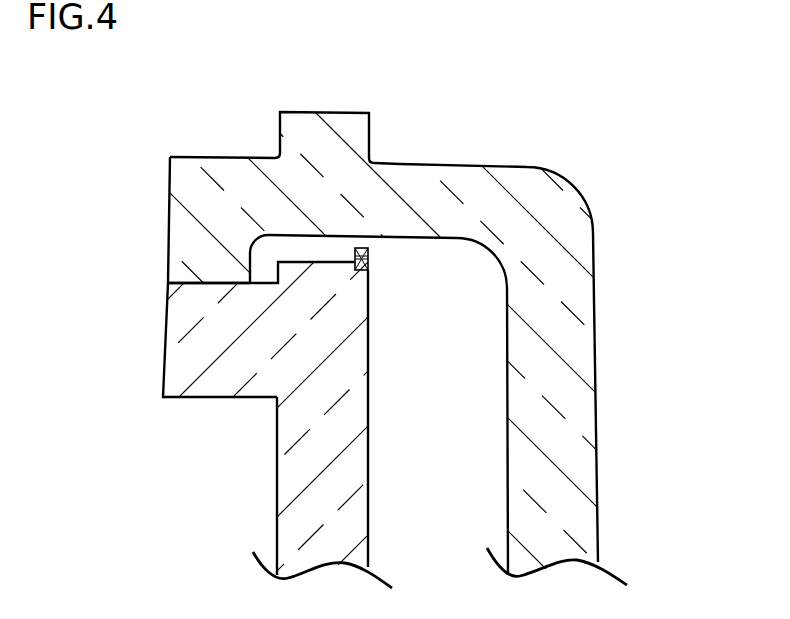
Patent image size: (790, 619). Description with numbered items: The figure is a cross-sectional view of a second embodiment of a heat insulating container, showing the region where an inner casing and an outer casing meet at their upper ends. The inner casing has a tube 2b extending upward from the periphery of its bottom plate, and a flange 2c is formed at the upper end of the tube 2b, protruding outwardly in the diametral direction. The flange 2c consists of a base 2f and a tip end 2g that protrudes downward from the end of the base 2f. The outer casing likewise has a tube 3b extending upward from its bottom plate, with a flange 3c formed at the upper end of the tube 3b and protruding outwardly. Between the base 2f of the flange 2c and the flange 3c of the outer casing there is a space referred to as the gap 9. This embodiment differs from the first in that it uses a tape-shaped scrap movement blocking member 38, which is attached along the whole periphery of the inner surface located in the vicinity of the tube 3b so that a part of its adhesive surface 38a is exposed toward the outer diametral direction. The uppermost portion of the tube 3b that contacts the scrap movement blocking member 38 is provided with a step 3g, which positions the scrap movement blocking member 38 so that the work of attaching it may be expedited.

The flange 2c is at (192, 173).
The tip end 2g is at (187, 237).
The base 2f is at (473, 183).
The tube 2b is at (582, 462).
The gap 9 is at (308, 247).
The flange 3c is at (180, 325).
The step 3g is at (355, 268).
The tube 3b is at (288, 472).
The scrap movement blocking member 38 is at (382, 282).
The adhesive surface 38a is at (355, 257).